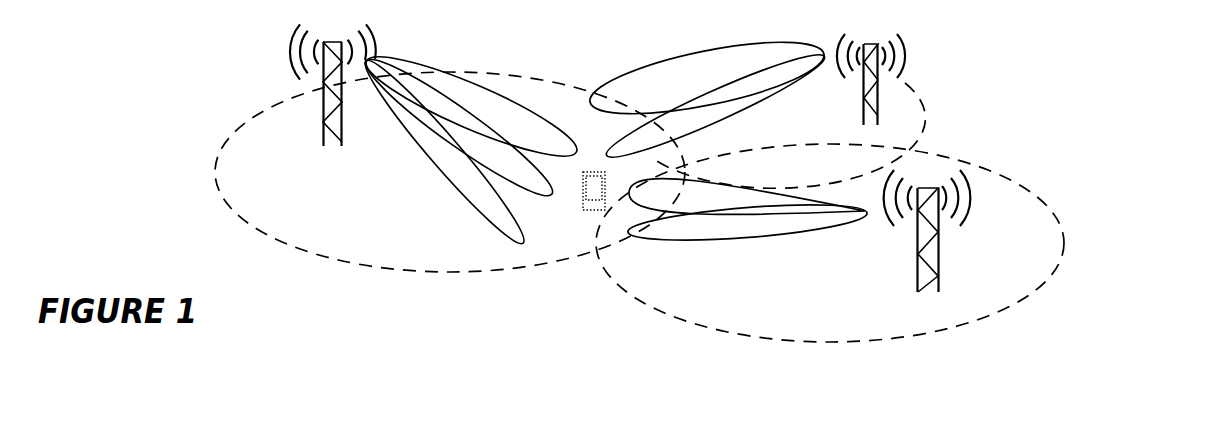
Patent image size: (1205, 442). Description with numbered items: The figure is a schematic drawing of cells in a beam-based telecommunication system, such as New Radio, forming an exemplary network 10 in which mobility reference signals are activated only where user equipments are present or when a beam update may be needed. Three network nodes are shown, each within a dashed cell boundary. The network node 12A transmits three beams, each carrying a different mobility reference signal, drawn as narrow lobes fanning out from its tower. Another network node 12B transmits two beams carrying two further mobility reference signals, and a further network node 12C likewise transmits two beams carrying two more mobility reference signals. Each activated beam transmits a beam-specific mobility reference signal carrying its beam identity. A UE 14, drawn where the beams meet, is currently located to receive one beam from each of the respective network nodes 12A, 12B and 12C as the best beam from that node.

The network 10 is at (1107, 80).
The network node 12A is at (277, 70).
The network node 12B is at (912, 258).
The network node 12C is at (882, 112).
The UE 14 is at (577, 222).